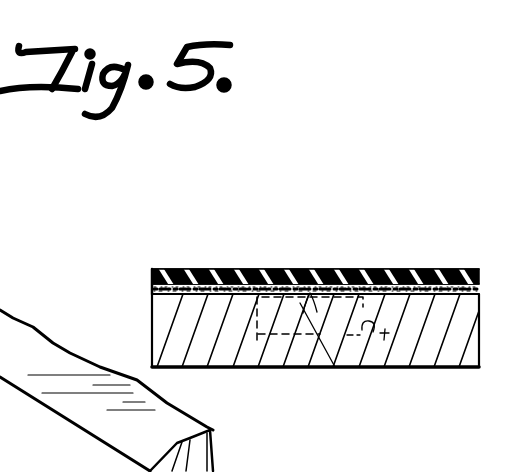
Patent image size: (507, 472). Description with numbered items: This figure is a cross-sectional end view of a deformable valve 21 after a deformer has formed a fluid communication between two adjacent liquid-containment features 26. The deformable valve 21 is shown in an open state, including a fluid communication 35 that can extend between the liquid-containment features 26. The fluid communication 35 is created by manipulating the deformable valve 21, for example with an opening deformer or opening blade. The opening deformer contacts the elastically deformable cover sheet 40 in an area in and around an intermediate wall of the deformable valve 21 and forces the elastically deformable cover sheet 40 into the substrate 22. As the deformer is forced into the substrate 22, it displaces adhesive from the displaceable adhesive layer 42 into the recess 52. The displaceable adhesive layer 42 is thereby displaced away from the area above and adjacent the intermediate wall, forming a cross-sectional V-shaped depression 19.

The cross-sectional V-shaped depression 19 is at (300, 300).
The deformable valve 21 is at (247, 251).
The substrate 22 is at (152, 325).
The liquid-containment features 26 is at (3, 330).
The fluid communication 35 is at (336, 367).
The elastically deformable cover sheet 40 is at (452, 270).
The displaceable adhesive layer 42 is at (151, 268).
The recess 52 is at (285, 262).